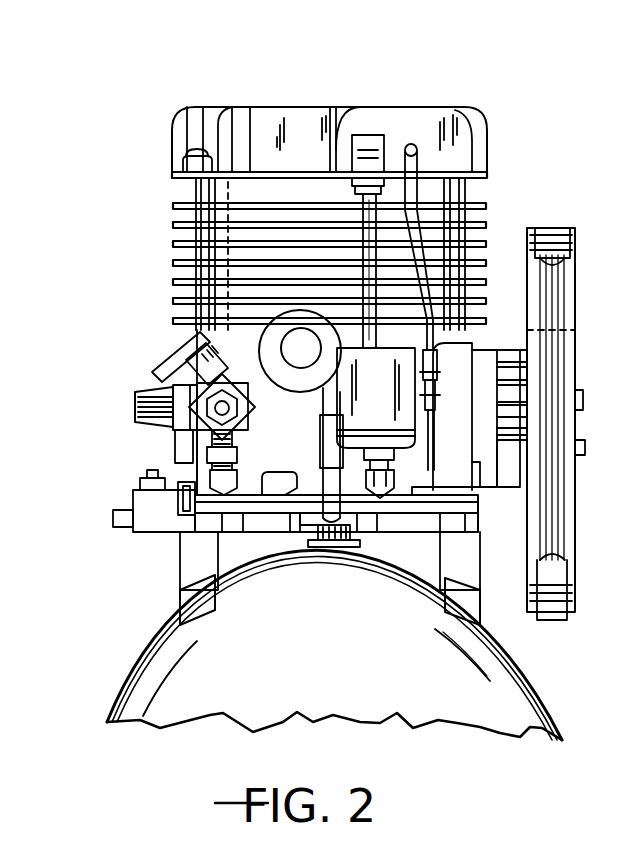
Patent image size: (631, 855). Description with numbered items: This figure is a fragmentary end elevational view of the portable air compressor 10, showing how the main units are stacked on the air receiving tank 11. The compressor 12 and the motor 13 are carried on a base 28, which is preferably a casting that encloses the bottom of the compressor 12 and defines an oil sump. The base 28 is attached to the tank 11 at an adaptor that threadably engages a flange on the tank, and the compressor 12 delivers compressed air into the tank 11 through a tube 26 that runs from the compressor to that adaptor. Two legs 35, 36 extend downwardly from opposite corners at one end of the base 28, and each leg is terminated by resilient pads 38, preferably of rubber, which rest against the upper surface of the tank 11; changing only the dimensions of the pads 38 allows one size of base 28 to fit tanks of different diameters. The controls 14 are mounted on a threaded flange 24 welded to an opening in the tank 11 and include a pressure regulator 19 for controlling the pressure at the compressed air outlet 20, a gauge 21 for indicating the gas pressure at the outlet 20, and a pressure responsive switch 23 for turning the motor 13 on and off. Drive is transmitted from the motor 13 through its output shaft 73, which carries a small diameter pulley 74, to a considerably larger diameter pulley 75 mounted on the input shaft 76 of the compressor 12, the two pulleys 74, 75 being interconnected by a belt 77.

The portable air compressor 10 is at (138, 228).
The air receiving tank 11 is at (550, 698).
The compressor 12 is at (470, 192).
The motor 13 is at (422, 307).
The controls 14 is at (133, 405).
The pressure regulator 19 is at (257, 390).
The compressed air outlet 20 is at (192, 440).
The gauge 21 is at (185, 350).
The pressure responsive switch 23 is at (415, 420).
The threaded flange 24 is at (302, 547).
The tube 26 is at (362, 207).
The base 28 is at (470, 548).
The leg 35 is at (180, 560).
The leg 36 is at (450, 550).
The pads 38 is at (182, 598).
The output shaft 73 is at (507, 360).
The pulley 74 is at (568, 330).
The pulley 75 is at (598, 480).
The input shaft 76 is at (512, 445).
The belt 77 is at (553, 620).